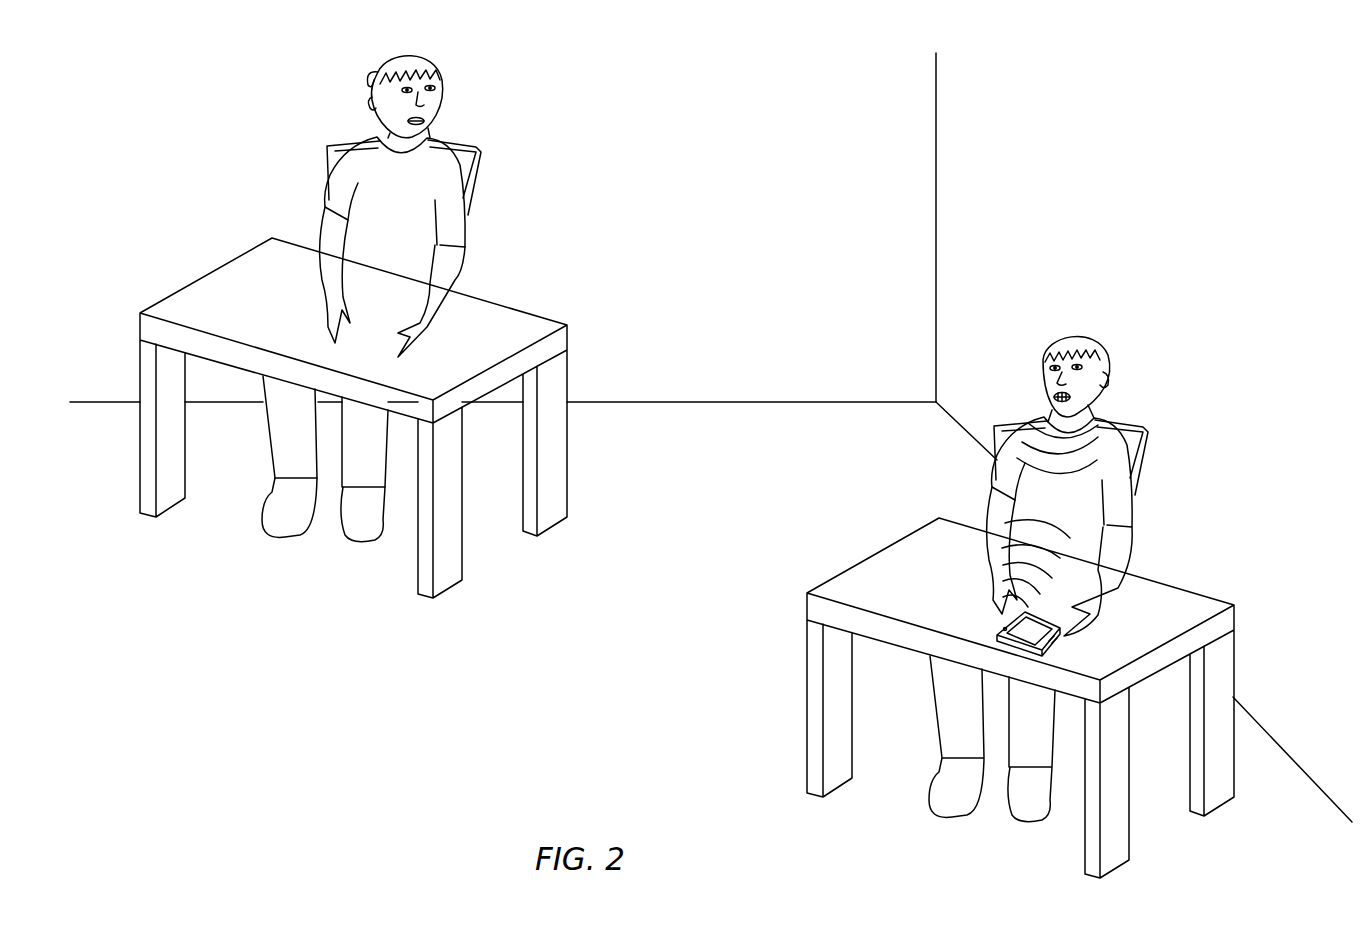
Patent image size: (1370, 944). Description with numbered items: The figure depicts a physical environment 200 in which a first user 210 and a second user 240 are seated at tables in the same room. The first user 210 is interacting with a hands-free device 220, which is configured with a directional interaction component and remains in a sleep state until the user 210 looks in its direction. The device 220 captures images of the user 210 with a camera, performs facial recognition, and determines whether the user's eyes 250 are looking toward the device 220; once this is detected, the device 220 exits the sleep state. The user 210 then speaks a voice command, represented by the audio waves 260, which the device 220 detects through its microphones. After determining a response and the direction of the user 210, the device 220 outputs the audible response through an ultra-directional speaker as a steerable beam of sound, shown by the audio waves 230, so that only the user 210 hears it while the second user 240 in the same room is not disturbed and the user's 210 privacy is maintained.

The environment 200 is at (886, 100).
The first user 210 is at (1067, 564).
The hands-free device 220 is at (1060, 641).
The audio waves 230 is at (985, 567).
The second user 240 is at (378, 64).
The user's eyes 250 is at (1087, 367).
The audio waves 260 is at (1145, 442).